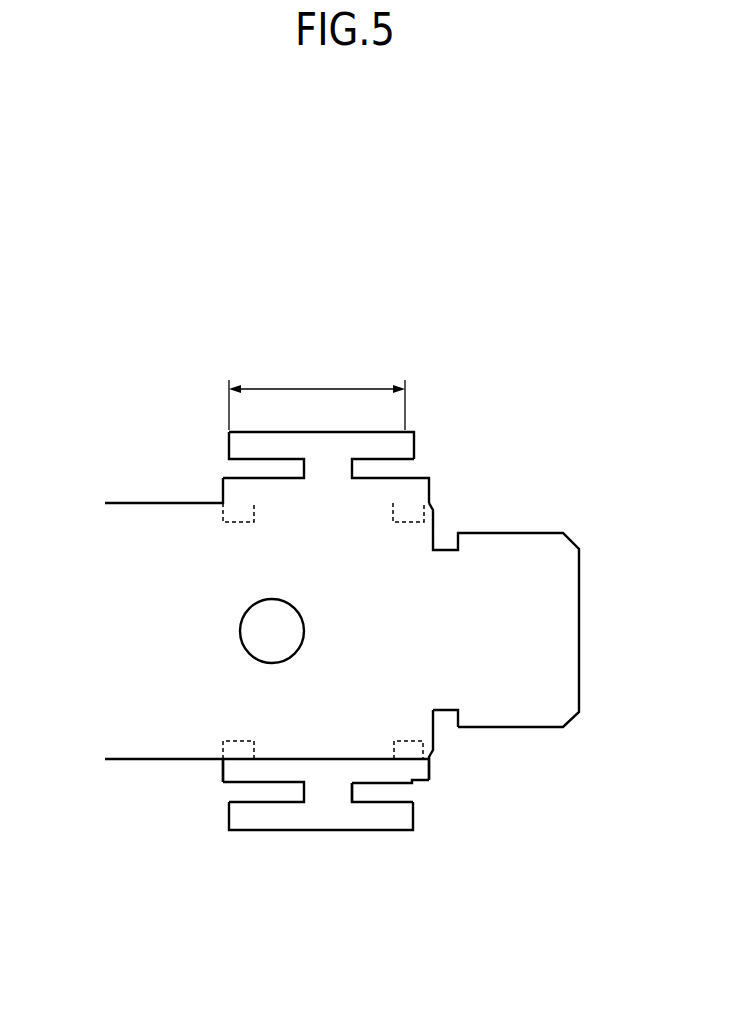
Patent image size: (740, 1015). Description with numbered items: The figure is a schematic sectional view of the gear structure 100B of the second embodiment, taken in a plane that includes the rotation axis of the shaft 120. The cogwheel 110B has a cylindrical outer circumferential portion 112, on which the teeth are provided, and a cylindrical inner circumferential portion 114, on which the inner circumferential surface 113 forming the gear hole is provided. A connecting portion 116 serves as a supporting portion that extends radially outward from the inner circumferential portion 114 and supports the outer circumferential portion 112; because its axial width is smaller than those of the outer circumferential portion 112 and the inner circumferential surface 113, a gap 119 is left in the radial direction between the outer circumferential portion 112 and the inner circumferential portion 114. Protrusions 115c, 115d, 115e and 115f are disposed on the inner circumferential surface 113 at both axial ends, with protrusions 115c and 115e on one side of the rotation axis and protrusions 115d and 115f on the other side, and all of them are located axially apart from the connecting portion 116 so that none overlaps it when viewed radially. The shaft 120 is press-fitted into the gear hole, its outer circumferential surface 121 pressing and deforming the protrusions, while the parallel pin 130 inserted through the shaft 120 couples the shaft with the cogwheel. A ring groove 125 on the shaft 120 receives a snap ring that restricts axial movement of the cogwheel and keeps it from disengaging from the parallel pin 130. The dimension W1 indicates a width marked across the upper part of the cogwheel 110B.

The gear structure 100B is at (603, 378).
The cogwheel 110B is at (295, 833).
The outer circumferential portion 112 is at (236, 831).
The inner circumferential surface 113 is at (313, 758).
The inner circumferential portion 114 is at (392, 793).
The connecting portion 116 is at (358, 793).
The gap 119 is at (237, 461).
The shaft 120 is at (439, 529).
The outer circumferential surface 121 is at (313, 761).
The ring groove 125 is at (445, 714).
The parallel pin 130 is at (252, 613).
The protrusion 115c is at (424, 749).
The protrusion 115d is at (412, 504).
The protrusion 115e is at (226, 748).
The protrusion 115f is at (232, 511).
The width W1 is at (316, 388).